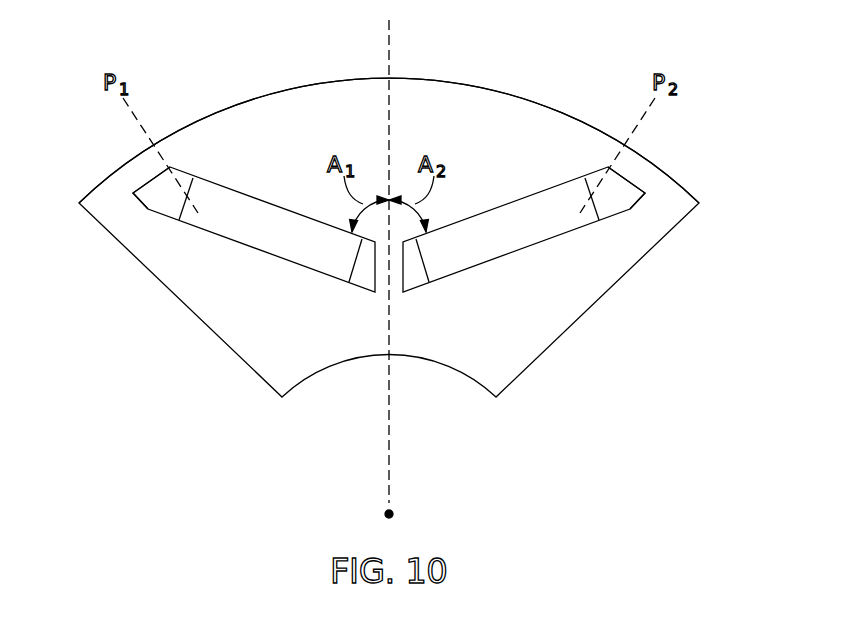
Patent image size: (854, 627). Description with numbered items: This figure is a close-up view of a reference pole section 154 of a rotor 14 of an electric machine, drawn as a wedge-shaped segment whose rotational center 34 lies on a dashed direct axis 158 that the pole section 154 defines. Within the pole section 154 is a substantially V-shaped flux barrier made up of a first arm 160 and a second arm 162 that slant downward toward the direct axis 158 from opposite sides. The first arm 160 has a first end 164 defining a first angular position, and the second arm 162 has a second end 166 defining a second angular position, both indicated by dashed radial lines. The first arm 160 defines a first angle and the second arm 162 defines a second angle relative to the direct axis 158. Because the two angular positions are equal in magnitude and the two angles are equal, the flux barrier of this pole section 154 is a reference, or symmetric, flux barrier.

The rotor 14 is at (566, 70).
The rotational axis center 34 is at (394, 513).
The reference pole section 154 is at (492, 107).
The direct axis 158 is at (389, 44).
The first arm 160 is at (262, 199).
The second arm 162 is at (543, 188).
The first end 164 is at (136, 171).
The second end 166 is at (642, 175).